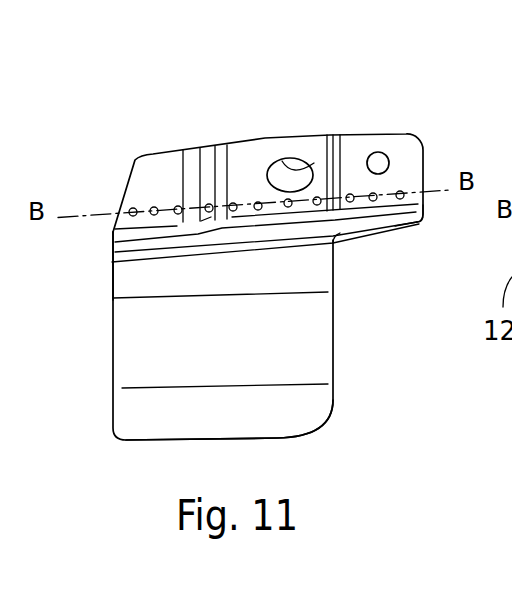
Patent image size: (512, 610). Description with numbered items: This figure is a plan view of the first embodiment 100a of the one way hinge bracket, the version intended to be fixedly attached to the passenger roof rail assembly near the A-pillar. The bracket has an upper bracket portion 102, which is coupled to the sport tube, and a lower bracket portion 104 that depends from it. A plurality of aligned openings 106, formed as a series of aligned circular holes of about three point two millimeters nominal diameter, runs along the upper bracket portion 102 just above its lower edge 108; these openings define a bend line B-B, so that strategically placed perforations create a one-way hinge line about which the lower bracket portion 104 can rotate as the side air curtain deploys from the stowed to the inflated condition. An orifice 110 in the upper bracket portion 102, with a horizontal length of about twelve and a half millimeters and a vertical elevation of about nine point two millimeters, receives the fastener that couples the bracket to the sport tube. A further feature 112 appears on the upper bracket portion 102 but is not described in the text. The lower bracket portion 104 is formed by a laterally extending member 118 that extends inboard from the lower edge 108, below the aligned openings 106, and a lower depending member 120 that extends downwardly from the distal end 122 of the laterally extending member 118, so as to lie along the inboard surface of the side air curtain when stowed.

The first embodiment of the one way hinge bracket 100a is at (347, 68).
The upper bracket portion 102 is at (241, 152).
The lower bracket portion 104 is at (319, 333).
The plurality of aligned openings 106 is at (404, 192).
The lower edge 108 is at (413, 224).
The orifice 110 is at (314, 163).
The slots 112 is at (134, 183).
The laterally extending member 118 is at (343, 225).
The lower depending member 120 is at (303, 412).
The distal end 122 is at (112, 256).